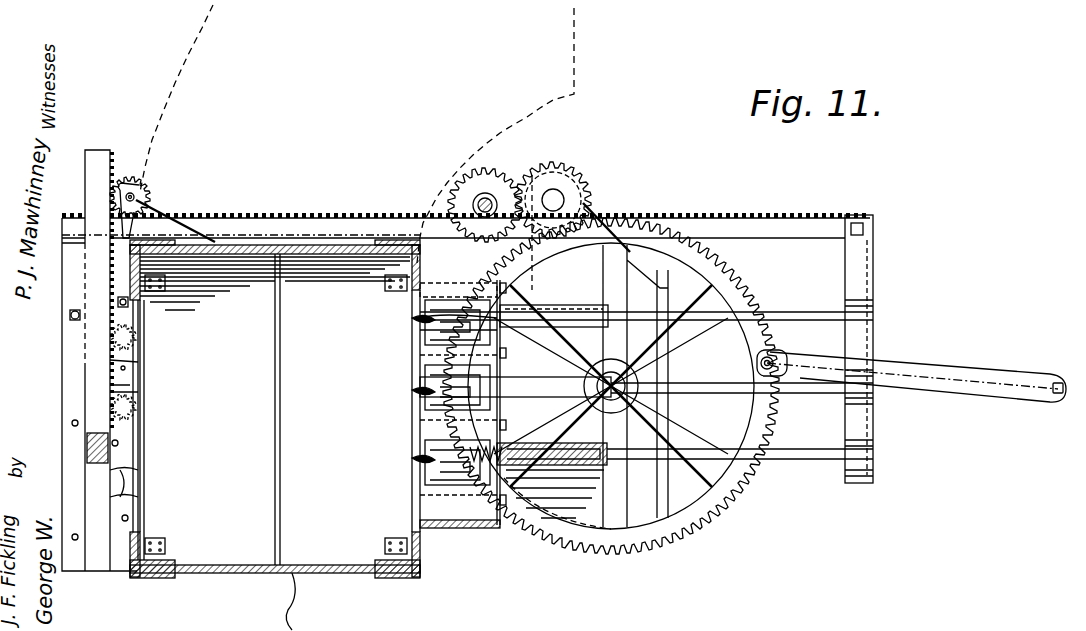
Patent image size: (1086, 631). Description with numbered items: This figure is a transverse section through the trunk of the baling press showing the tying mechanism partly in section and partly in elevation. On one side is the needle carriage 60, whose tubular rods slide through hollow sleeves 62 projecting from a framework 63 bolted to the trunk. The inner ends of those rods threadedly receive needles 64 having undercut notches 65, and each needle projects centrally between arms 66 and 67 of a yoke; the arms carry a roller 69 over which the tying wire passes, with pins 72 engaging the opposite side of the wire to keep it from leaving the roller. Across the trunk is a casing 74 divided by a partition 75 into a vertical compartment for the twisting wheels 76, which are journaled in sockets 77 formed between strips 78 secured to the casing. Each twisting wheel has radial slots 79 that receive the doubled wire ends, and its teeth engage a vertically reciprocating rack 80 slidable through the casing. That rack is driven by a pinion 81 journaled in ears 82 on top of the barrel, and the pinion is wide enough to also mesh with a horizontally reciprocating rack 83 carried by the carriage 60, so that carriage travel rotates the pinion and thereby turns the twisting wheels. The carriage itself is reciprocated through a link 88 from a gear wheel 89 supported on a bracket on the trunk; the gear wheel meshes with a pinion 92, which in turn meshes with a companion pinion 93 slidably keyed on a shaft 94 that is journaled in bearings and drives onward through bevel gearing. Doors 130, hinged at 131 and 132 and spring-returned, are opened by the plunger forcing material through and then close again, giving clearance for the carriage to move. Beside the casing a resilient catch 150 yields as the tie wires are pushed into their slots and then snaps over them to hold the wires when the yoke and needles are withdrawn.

The carriage 60 is at (868, 270).
The hollow sleeves 62 is at (567, 322).
The framework 63 is at (420, 458).
The needles 64 is at (415, 317).
The undercut notches 65 is at (420, 398).
The arm 66 is at (420, 328).
The arm 67 is at (812, 455).
The roller 69 is at (420, 360).
The pins 72 is at (420, 340).
The casing 74 is at (72, 388).
The partition 75 is at (101, 563).
The twisting wheels 76 is at (132, 394).
The sockets 77 is at (130, 488).
The strips 78 is at (130, 444).
The radial slots 79 is at (130, 414).
The vertically reciprocating rack 80 is at (97, 150).
The pinion 81 is at (142, 182).
The ears 82 is at (165, 200).
The horizontally reciprocating rack 83 is at (220, 213).
The link 88 is at (895, 362).
The gear wheel 89 is at (740, 275).
The pinion 92 is at (572, 172).
The companion pinion 93 is at (500, 180).
The shaft 94 is at (470, 208).
The doors 130 is at (280, 418).
The hinge 131 is at (180, 578).
The hinge 132 is at (390, 578).
The catch 150 is at (125, 361).